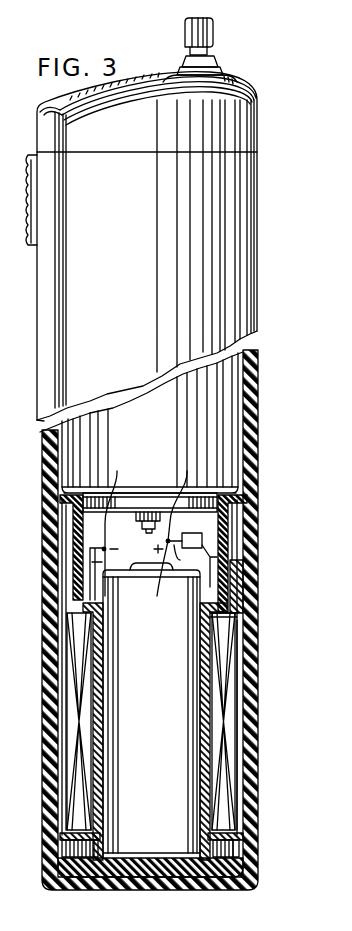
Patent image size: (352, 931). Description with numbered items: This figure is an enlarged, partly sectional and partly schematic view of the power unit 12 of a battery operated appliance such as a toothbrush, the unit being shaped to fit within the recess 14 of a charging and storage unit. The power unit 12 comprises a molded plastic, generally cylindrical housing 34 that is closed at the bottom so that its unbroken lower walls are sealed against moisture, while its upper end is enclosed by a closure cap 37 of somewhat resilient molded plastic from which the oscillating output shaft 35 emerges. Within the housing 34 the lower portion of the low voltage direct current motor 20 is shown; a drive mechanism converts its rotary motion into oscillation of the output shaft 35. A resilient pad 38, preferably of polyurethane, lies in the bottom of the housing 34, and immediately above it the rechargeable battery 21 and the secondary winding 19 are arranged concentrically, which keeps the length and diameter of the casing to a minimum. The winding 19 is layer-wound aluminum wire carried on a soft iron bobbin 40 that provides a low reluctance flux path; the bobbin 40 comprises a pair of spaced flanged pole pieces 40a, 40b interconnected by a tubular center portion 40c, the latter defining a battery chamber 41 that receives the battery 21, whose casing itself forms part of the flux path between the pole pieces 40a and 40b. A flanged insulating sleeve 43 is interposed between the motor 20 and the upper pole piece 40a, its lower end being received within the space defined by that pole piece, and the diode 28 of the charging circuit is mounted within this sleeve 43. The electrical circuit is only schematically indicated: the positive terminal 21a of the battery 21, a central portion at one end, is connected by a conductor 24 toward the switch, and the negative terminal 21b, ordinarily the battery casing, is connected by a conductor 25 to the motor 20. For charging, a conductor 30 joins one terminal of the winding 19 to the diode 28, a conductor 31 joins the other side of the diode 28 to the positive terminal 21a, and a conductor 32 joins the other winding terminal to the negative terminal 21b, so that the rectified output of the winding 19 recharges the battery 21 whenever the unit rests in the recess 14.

The power unit 12 is at (266, 247).
The recess 14 is at (5, 195).
The secondary winding 19 is at (222, 757).
The electric motor 20 is at (253, 337).
The rechargeable battery 21 is at (188, 728).
The positive terminal 21a is at (151, 593).
The negative terminal 21b is at (95, 565).
The conductor 24 is at (182, 524).
The conductor 25 is at (115, 524).
The diode 28 is at (202, 541).
The conductor 30 is at (211, 560).
The conductor 31 is at (186, 555).
The conductor 32 is at (90, 556).
The housing 34 is at (258, 383).
The output shaft 35 is at (214, 36).
The closure cap 37 is at (256, 115).
The resilient pad 38 is at (60, 868).
The bobbin 40 is at (88, 747).
The upper flanged pole piece 40a is at (238, 578).
The lower flanged pole piece 40b is at (243, 852).
The tubular center portion 40c is at (235, 690).
The battery chamber 41 is at (197, 655).
The flanged insulating sleeve 43 is at (218, 523).